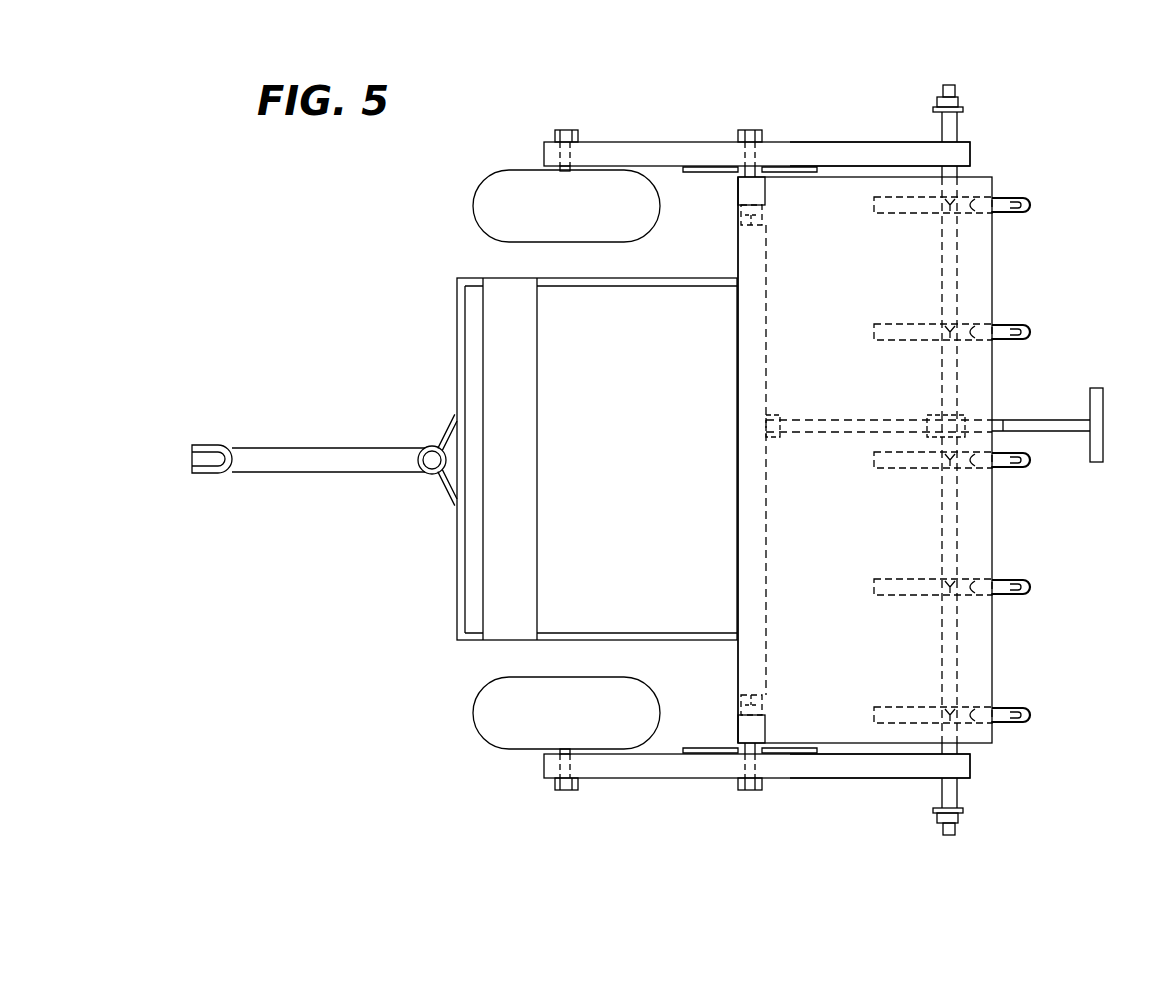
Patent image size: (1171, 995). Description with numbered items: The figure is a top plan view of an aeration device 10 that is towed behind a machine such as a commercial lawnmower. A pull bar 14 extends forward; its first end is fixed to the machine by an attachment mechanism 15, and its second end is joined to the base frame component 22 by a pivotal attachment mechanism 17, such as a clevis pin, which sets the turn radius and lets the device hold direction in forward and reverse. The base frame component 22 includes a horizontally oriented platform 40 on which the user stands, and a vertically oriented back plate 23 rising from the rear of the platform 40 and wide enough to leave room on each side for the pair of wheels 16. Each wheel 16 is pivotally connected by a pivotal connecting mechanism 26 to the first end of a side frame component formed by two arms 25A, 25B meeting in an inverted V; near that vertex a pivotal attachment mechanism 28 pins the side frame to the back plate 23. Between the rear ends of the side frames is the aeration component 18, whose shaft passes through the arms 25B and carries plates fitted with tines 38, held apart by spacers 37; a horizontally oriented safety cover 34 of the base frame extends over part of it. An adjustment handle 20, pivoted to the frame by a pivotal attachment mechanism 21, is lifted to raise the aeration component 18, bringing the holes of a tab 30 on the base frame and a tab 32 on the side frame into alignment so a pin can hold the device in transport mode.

The aeration device 10 is at (298, 257).
The pull bar 14 is at (335, 457).
The attachment mechanism 15 is at (208, 445).
The wheels 16 is at (581, 218).
The pivotal attachment mechanism 17 is at (433, 444).
The aeration component 18 is at (925, 460).
The adjustment handle 20 is at (1103, 425).
The pivotal attachment mechanism 21 is at (772, 415).
The base frame component 22 is at (558, 459).
The vertically oriented back plate 23 is at (737, 537).
The arm 25A is at (597, 142).
The arm 25B is at (903, 142).
The pivotal connecting mechanism 26 is at (567, 129).
The pivotal attachment mechanism 28 is at (750, 130).
The tab 30 is at (760, 188).
The tab 32 is at (768, 197).
The horizontally oriented safety cover 34 is at (842, 545).
The spacers 37 is at (960, 122).
The tines 38 is at (1007, 578).
The horizontally oriented platform 40 is at (649, 428).